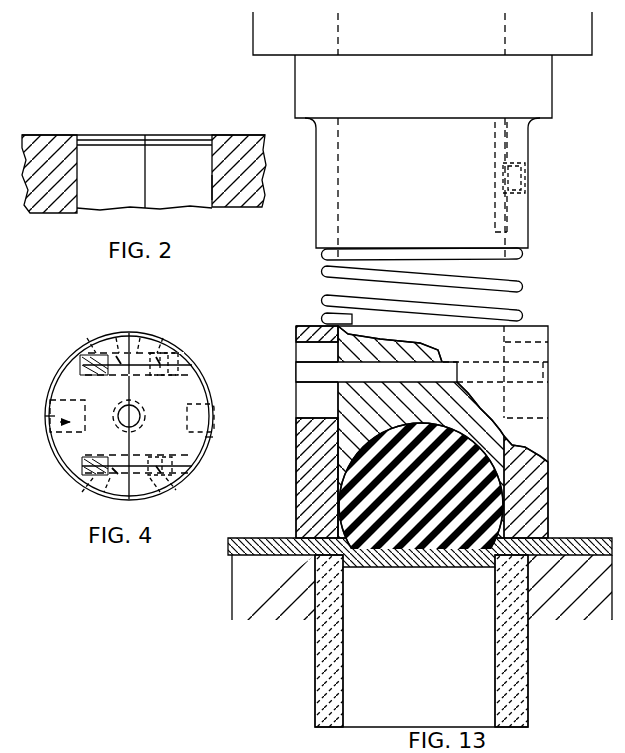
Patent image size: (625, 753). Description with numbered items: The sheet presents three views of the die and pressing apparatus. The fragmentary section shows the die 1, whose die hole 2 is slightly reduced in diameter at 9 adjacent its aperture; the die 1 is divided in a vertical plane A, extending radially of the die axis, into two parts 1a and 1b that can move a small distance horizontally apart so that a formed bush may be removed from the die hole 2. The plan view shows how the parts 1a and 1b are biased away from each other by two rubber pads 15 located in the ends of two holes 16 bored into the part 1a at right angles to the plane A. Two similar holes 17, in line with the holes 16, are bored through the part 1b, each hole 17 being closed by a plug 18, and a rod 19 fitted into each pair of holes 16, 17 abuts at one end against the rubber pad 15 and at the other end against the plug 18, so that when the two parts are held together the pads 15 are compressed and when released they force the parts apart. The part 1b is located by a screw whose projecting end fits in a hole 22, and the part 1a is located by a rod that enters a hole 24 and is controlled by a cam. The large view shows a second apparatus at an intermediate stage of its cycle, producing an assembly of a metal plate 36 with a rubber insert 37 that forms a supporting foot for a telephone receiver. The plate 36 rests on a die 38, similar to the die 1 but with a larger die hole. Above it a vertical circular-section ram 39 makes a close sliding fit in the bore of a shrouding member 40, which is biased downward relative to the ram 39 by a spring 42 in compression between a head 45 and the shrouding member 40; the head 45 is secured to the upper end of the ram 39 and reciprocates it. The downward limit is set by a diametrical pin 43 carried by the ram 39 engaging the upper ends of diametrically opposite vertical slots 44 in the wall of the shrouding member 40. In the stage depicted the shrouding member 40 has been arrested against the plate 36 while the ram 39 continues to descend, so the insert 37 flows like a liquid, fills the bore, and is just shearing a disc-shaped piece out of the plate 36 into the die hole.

In FIG. 2, the die 1 is at (235, 148).
In FIG. 4, the die 1 is at (206, 400).
In FIG. 2, the die part 1a is at (63, 148).
In FIG. 4, the die part 1a is at (62, 381).
In FIG. 2, the die part 1b is at (246, 183).
In FIG. 4, the die part 1b is at (195, 437).
In FIG. 2, the die hole 2 is at (190, 191).
In FIG. 4, the die hole 2 is at (117, 423).
In FIG. 2, the reduced diameter portion 9 is at (210, 140).
In FIG. 2, the vertical plane A is at (145, 167).
In FIG. 4, the vertical plane A is at (129, 390).
In FIG. 4, the rubber pad 15 is at (88, 331).
In FIG. 4, the hole 16 is at (116, 331).
In FIG. 4, the hole 17 is at (164, 331).
In FIG. 4, the plug 18 is at (193, 368).
In FIG. 4, the rod 19 is at (140, 331).
In FIG. 4, the hole 22 is at (215, 423).
In FIG. 4, the hole 24 is at (52, 423).
In FIG. 13, the metal plate 36 is at (584, 538).
In FIG. 13, the rubber pad insert 37 is at (490, 503).
In FIG. 13, the die 38 is at (326, 688).
In FIG. 13, the ram 39 is at (345, 288).
In FIG. 13, the shrouding member 40 is at (306, 463).
In FIG. 13, the spring 42 is at (521, 284).
In FIG. 13, the diametrical pin 43 is at (308, 372).
In FIG. 13, the vertical slot 44 is at (318, 400).
In FIG. 13, the head 45 is at (532, 100).